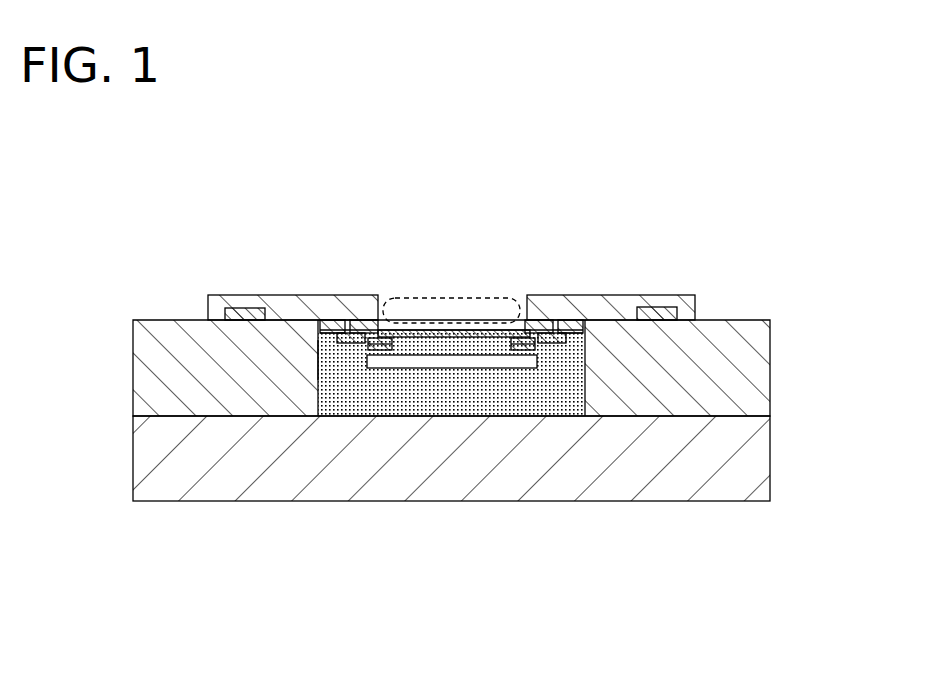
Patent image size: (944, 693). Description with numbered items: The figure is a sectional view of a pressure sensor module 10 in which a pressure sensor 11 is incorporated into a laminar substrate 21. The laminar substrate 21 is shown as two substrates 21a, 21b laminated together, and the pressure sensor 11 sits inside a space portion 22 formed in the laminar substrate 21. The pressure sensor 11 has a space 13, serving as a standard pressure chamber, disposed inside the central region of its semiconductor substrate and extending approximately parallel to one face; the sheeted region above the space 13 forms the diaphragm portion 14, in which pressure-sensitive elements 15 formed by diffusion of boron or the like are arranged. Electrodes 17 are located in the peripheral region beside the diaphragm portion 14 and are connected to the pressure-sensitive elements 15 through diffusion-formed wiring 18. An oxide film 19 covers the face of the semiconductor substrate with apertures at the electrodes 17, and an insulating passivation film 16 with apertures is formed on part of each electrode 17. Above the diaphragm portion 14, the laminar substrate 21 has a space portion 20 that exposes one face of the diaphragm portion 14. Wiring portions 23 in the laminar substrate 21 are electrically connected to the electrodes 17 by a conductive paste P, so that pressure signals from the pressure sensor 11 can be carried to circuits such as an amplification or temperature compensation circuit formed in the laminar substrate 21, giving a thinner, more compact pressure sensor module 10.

The pressure sensor module 10 is at (500, 433).
The pressure sensor 11 is at (469, 492).
The space (standard pressure chamber) 13 is at (478, 360).
The diaphragm portion 14 is at (455, 357).
The pressure-sensitive elements 15 is at (378, 346).
The insulating film (passivation film) 16 is at (325, 336).
The electrodes 17 is at (342, 342).
The wiring 18 is at (352, 346).
The oxide film 19 is at (335, 332).
The space portion 20 is at (452, 305).
The laminar substrate 21 is at (521, 410).
The substrate 21a is at (752, 373).
The substrate 21b is at (752, 452).
The space portion 22 is at (317, 358).
The wiring portions 23 is at (245, 313).
The conductive paste P is at (295, 303).